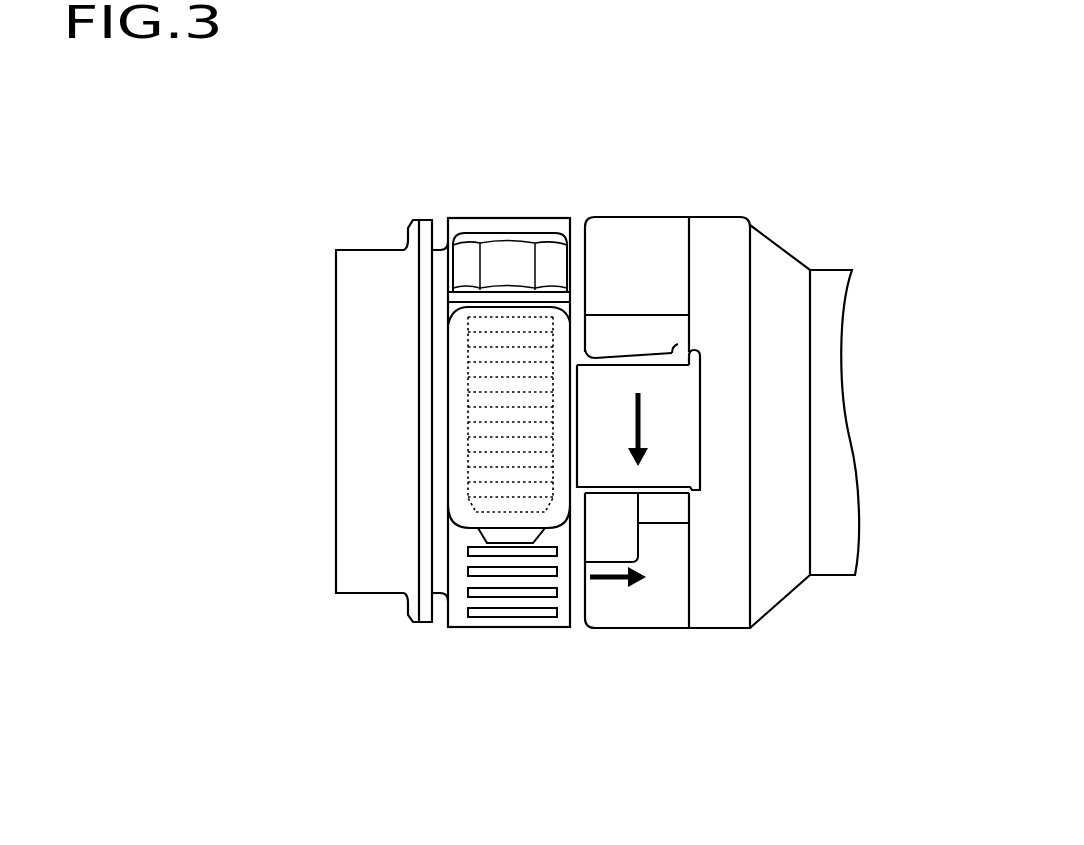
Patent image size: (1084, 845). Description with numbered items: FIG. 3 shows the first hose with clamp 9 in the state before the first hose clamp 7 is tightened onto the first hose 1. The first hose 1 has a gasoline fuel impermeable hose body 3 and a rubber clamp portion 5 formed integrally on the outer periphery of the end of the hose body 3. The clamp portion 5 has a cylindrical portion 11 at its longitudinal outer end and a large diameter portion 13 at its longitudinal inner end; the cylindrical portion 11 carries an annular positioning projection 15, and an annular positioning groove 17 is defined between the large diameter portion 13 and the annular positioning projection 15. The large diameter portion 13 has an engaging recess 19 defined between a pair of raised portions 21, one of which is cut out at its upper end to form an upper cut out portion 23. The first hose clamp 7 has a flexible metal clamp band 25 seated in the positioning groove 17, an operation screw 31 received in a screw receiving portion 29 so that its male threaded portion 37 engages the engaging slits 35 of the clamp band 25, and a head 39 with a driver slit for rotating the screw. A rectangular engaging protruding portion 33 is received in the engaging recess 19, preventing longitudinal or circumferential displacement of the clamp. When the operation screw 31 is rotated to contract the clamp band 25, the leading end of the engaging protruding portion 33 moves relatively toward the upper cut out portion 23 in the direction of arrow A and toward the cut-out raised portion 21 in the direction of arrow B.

The first hose with clamp 9 is at (186, 167).
The first hose 1 is at (345, 232).
The cylindrical portion 11 is at (415, 218).
The annular positioning projection 15 is at (418, 343).
The annular positioning groove 17 is at (440, 567).
The clamp band 25 is at (512, 218).
The head 39 is at (483, 232).
The operation screw 31 is at (537, 228).
The screw receiving portion 29 is at (465, 428).
The male threaded portion 37 is at (506, 537).
The engaging slits 35 is at (524, 570).
The first hose clamp 7 is at (511, 652).
The clamp portion 5 is at (623, 212).
The large diameter portion 13 is at (708, 214).
The raised portions 21 is at (645, 331).
The engaging recess 19 is at (672, 352).
The hose body 3 is at (842, 268).
The engaging protruding portion 33 is at (663, 397).
The upper cut out portion 23 is at (612, 528).